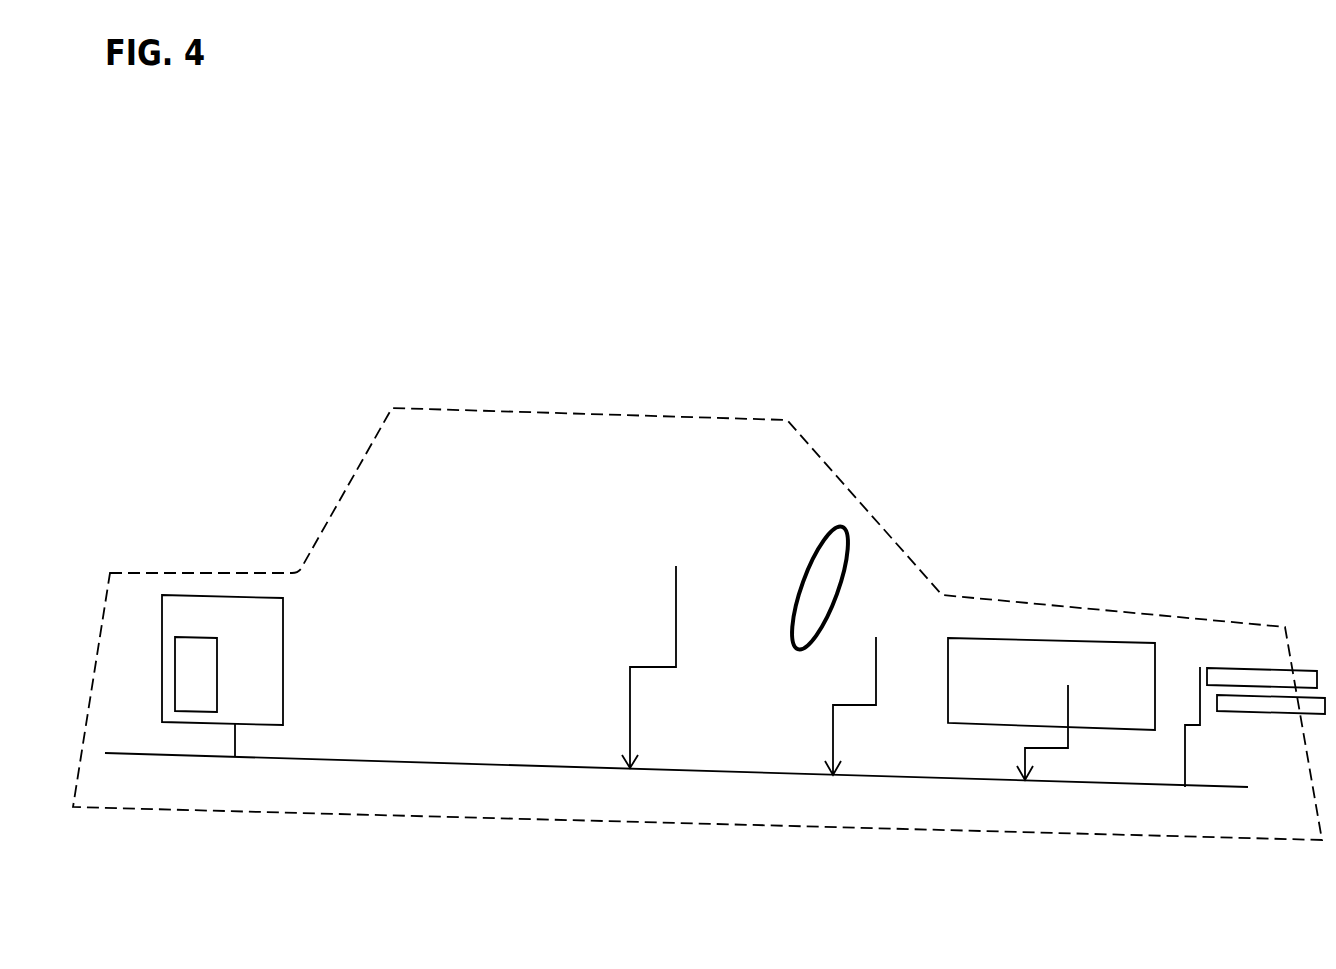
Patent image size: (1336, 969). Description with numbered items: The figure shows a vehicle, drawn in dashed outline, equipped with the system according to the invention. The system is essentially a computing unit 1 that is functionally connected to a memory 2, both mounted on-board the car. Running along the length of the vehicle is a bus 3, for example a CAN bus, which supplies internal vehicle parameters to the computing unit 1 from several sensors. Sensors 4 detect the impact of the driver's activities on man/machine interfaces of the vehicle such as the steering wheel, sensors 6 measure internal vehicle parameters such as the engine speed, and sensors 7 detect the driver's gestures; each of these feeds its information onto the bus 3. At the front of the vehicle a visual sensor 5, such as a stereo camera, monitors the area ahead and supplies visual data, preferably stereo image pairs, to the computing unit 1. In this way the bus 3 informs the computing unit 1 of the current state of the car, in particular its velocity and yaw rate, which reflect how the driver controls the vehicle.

The computing unit 1 is at (283, 620).
The memory 2 is at (207, 660).
The bus 3 is at (510, 766).
The sensor 4 is at (840, 605).
The visual sensor 5 is at (1216, 679).
The sensor 6 is at (1051, 709).
The sensor 7 is at (652, 645).